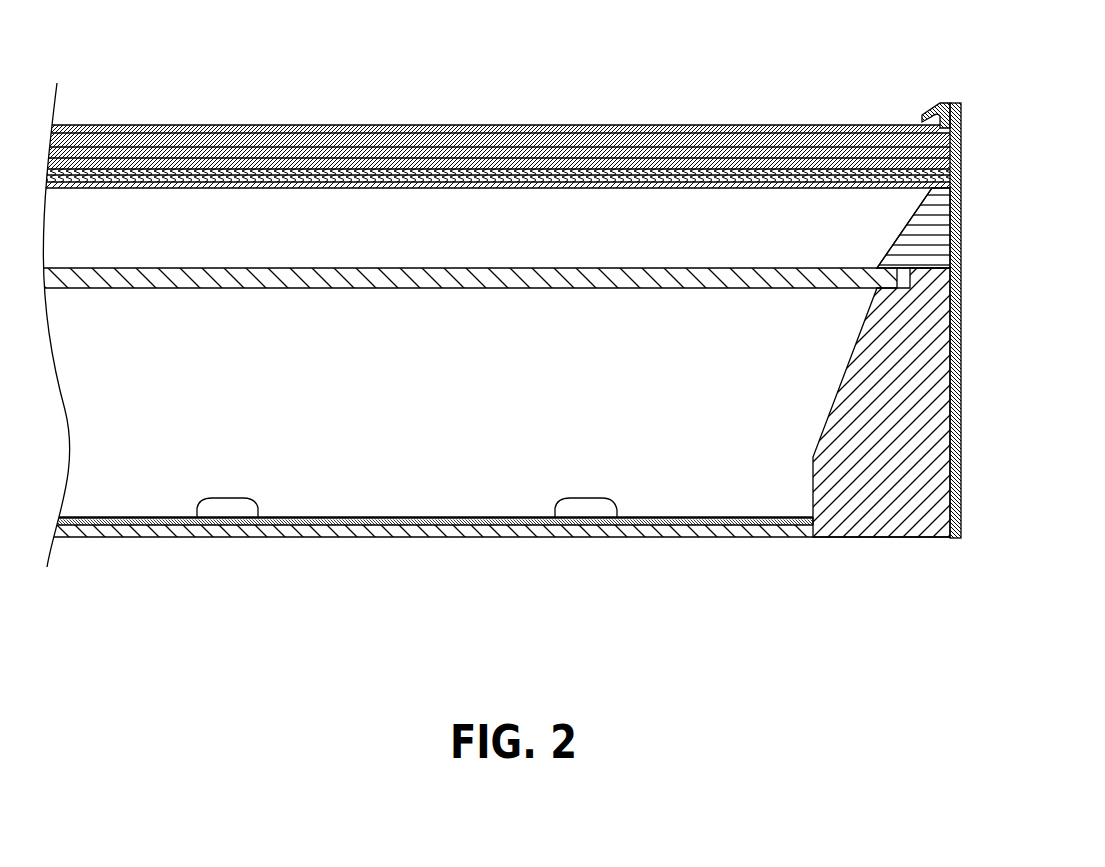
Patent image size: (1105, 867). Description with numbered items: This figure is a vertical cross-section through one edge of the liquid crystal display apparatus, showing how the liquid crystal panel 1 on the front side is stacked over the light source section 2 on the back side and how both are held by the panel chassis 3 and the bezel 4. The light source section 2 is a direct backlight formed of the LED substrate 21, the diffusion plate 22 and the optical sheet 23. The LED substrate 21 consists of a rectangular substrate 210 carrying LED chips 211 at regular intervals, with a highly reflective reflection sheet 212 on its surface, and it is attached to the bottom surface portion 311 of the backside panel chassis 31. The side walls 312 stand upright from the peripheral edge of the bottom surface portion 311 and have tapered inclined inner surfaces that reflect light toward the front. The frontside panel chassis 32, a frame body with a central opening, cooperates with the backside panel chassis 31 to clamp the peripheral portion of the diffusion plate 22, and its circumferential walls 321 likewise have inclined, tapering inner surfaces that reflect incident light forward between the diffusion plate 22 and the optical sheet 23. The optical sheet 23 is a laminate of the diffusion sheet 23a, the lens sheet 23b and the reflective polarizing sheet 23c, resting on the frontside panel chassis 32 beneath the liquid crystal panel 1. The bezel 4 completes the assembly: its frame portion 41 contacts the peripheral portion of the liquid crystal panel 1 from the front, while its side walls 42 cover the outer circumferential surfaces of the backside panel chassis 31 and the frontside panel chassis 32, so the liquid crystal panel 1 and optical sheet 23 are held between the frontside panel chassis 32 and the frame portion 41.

The liquid crystal panel 1 is at (243, 125).
The light source section 2 is at (426, 538).
The panel chassis 3 is at (572, 399).
The bezel 4 is at (964, 270).
The LED substrate 21 is at (426, 522).
The diffusion plate 22 is at (195, 291).
The optical sheet 23 is at (495, 218).
The diffusion sheet 23a is at (307, 170).
The lens sheet 23b is at (357, 181).
The reflective polarizing sheet 23c is at (272, 228).
The backside panel chassis 31 is at (550, 439).
The frontside panel chassis 32 is at (936, 228).
The frame portion 41 is at (935, 100).
The side walls 42 is at (962, 157).
The substrate 210 is at (150, 525).
The LED chips 211 is at (210, 498).
The reflection sheet 212 is at (128, 517).
The bottom surface portion 311 is at (637, 527).
The side walls 312 is at (887, 490).
The circumferential walls 321 is at (908, 238).